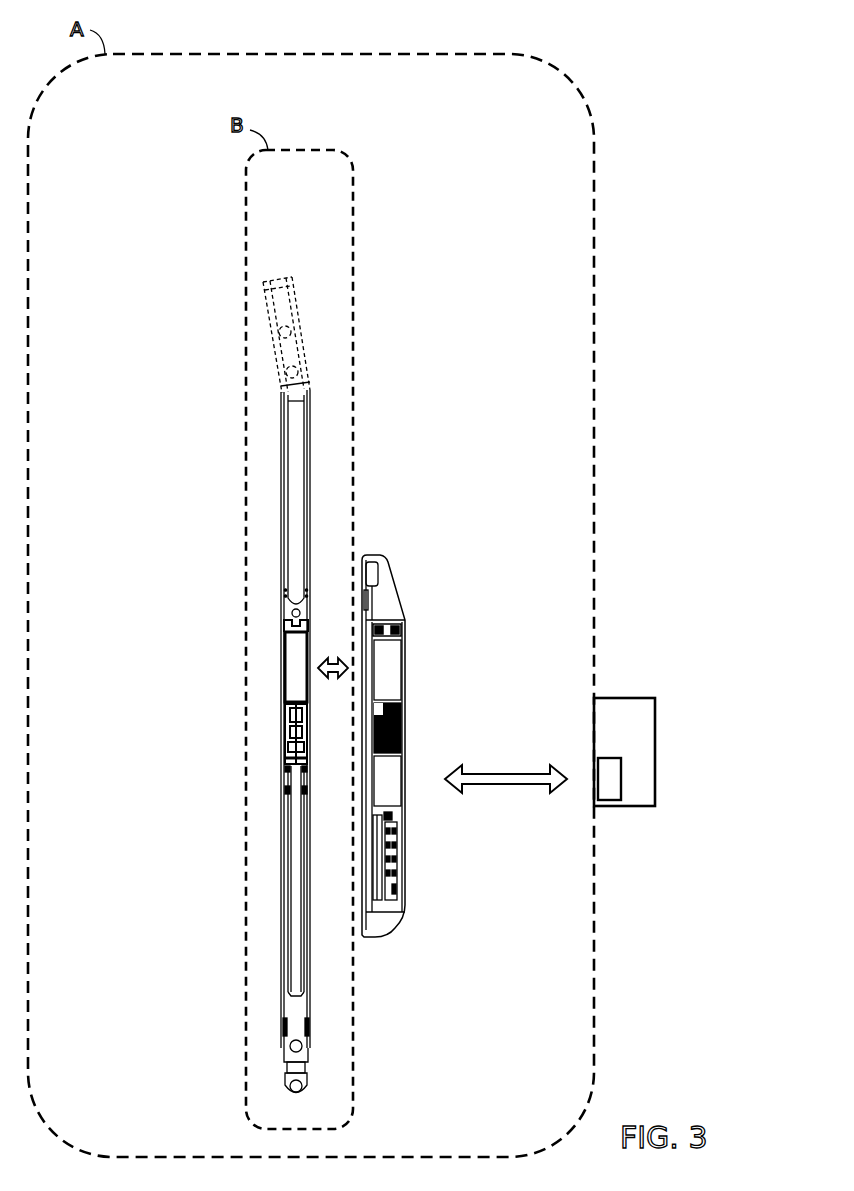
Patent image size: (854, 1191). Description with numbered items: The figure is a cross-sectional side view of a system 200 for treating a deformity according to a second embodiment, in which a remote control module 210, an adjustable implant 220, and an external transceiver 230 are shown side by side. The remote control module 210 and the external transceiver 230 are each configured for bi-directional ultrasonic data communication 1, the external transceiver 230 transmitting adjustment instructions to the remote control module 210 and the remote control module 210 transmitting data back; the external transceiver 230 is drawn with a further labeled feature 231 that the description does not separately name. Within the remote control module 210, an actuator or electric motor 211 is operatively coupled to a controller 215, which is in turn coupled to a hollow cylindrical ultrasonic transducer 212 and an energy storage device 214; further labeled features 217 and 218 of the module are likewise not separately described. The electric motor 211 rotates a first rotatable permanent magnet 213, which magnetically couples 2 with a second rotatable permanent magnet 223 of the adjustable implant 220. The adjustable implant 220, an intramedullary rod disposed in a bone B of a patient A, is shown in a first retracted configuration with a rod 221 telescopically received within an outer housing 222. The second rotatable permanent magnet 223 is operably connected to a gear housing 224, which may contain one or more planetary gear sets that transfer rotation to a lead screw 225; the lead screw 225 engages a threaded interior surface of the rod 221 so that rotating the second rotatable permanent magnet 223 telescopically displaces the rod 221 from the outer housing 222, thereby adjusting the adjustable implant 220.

The system 200 is at (660, 70).
The movement direction 1 is at (512, 784).
The magnetic coupling 2 is at (333, 656).
The remote control module 210 is at (463, 552).
The electric motor 211 is at (400, 784).
The ultrasonic transducer 212 is at (393, 862).
The first rotatable permanent magnet 213 is at (388, 660).
The energy storage device 214 is at (390, 813).
The controller 215 is at (377, 882).
The cap 217 is at (379, 568).
The module 218 is at (400, 728).
The adjustable implant 220 is at (262, 397).
The rod 221 is at (292, 1010).
The outer housing 222 is at (283, 541).
The second rotatable permanent magnet 223 is at (292, 667).
The gear housing 224 is at (290, 740).
The lead screw 225 is at (292, 832).
The external transceiver 230 is at (642, 686).
The receiver 231 is at (610, 788).